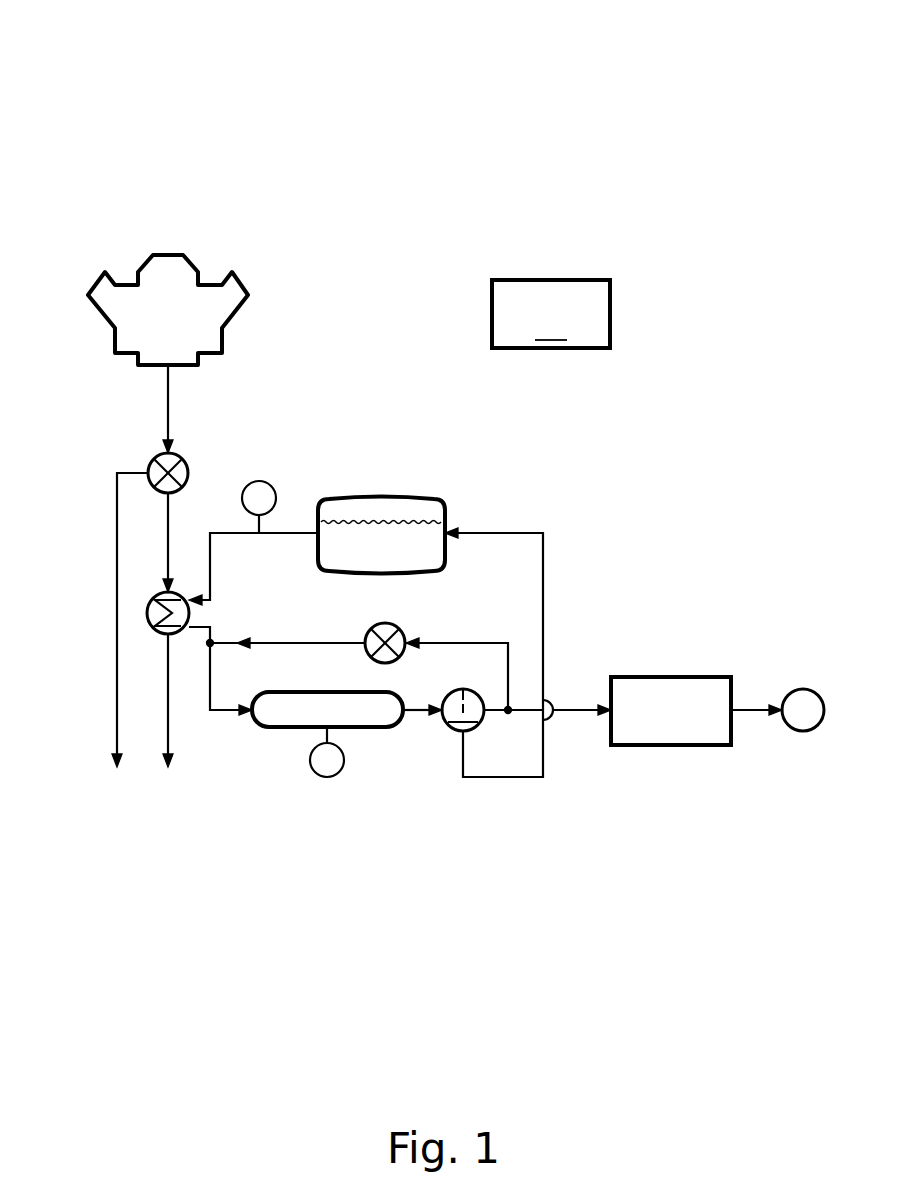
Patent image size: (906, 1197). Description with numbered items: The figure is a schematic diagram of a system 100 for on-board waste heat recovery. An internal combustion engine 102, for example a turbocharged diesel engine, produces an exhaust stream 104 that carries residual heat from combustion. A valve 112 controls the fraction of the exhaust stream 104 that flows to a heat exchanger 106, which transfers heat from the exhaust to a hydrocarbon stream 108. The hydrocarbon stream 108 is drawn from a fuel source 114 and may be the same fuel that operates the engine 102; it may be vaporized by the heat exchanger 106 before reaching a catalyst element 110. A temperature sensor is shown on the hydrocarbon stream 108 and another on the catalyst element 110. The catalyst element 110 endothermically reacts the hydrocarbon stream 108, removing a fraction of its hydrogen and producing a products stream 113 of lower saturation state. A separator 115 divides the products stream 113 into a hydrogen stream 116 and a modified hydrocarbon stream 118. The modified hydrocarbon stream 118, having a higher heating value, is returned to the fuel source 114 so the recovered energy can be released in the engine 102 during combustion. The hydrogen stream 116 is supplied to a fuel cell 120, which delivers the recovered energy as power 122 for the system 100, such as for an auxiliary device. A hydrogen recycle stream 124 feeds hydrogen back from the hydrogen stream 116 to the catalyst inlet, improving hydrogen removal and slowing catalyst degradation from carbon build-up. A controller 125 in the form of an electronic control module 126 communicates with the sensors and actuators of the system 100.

The system 100 is at (102, 64).
The internal combustion engine 102 is at (166, 255).
The exhaust stream 104 is at (170, 408).
The heat exchanger 106 is at (190, 618).
The hydrocarbon stream 108 is at (288, 533).
The catalyst element 110 is at (385, 728).
The valve 112 is at (188, 468).
The products stream 113 is at (423, 713).
The fuel source 114 is at (410, 498).
The separator 115 is at (472, 698).
The hydrogen stream 116 is at (500, 716).
The modified hydrocarbon stream 118 is at (530, 778).
The fuel cell 120 is at (703, 677).
The power 122 is at (802, 689).
The hydrogen recycle stream 124 is at (338, 643).
The controller 125 is at (551, 285).
The electronic control module 126 is at (586, 280).